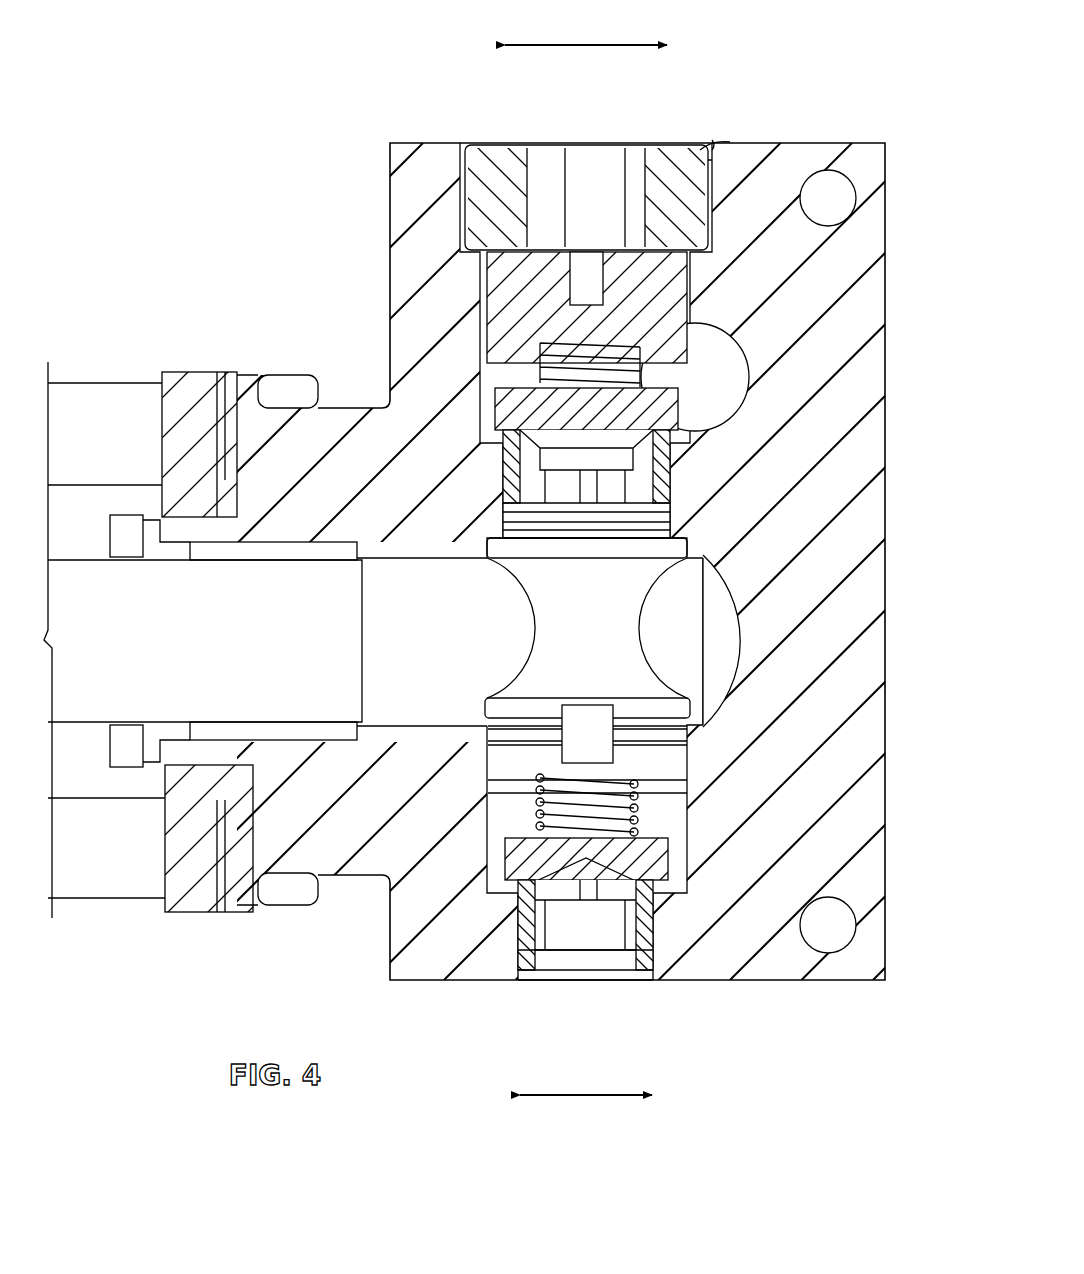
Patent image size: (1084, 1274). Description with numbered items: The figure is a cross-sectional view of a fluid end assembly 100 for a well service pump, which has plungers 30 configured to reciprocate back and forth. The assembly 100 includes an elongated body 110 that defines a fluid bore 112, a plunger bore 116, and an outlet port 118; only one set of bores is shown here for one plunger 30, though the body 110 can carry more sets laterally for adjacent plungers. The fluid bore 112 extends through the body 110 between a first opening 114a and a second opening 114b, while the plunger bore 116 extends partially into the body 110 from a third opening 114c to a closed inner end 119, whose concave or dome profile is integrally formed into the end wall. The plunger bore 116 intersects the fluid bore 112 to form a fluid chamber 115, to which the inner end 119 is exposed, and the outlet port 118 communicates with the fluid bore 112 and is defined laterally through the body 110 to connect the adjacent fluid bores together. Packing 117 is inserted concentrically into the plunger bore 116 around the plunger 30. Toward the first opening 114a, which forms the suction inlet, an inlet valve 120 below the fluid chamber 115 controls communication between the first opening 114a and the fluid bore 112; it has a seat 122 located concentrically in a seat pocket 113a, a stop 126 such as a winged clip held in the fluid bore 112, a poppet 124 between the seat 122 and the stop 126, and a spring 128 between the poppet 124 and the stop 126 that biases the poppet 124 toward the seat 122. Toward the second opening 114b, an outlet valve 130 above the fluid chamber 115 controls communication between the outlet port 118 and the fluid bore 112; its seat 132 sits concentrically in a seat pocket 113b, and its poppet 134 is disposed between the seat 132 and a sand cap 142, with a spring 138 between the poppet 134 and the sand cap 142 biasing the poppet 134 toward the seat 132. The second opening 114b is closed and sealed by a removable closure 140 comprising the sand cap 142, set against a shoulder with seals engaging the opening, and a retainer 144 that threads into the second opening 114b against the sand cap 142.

The plunger 30 is at (68, 727).
The fluid end assembly 100 is at (192, 200).
The body 110 is at (390, 215).
The fluid bore 112 is at (722, 562).
The seat pocket 113a is at (540, 962).
The seat pocket 113b is at (672, 502).
The first opening 114a is at (640, 985).
The second opening 114b is at (700, 148).
The third opening 114c is at (286, 735).
The fluid chamber 115 is at (587, 628).
The plunger bore 116 is at (428, 728).
The packing 117 is at (143, 780).
The outlet port 118 is at (732, 364).
The closed inner end 119 is at (728, 612).
The inlet valve 120 is at (696, 871).
The seat 122 is at (660, 925).
The poppet 124 is at (712, 840).
The stop 126 is at (615, 762).
The spring 128 is at (640, 808).
The outlet valve 130 is at (687, 306).
The seat 132 is at (503, 494).
The poppet 134 is at (495, 404).
The spring 138 is at (492, 368).
The closure 140 is at (516, 142).
The sand cap 142 is at (606, 255).
The retainer 144 is at (678, 160).